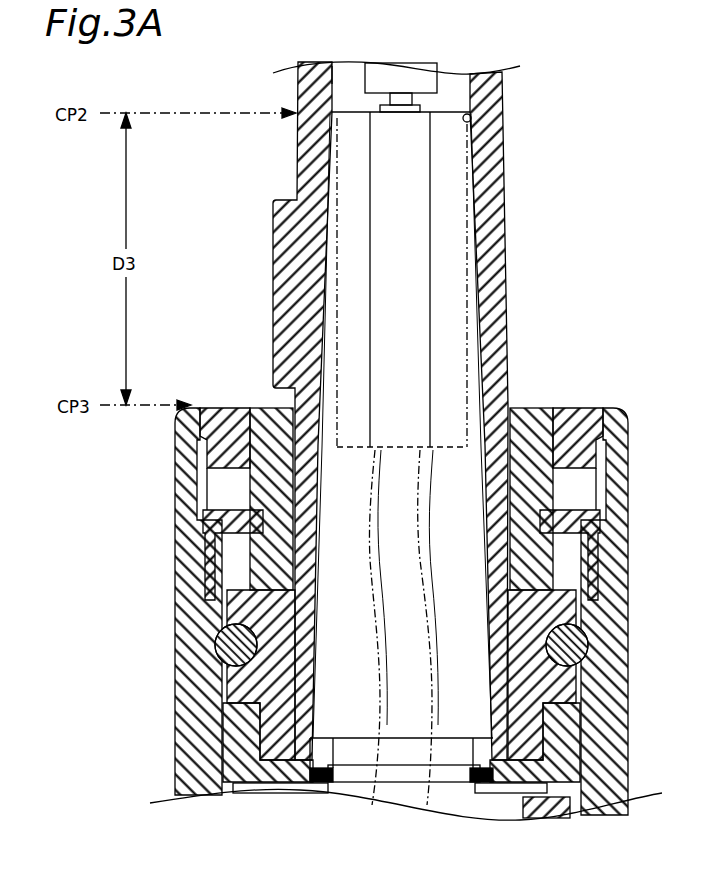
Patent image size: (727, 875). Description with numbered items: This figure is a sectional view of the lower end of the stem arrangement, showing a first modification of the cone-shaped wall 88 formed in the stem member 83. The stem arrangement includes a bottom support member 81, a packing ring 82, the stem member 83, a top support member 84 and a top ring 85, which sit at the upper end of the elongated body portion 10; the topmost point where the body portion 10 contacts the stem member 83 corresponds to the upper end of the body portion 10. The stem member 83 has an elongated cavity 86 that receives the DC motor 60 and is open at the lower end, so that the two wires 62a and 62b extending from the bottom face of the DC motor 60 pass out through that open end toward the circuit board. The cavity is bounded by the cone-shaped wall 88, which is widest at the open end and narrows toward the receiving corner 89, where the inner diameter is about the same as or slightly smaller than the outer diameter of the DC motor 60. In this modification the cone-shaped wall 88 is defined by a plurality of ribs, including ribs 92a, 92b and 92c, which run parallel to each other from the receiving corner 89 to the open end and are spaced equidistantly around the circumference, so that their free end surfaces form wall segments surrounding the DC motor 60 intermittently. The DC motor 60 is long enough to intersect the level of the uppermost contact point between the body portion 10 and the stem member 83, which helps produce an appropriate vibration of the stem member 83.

The body portion 10 is at (604, 577).
The DC motor 60 is at (468, 296).
The wire 62a is at (353, 797).
The wire 62b is at (434, 801).
The bottom support member 81 is at (570, 730).
The packing ring 82 is at (582, 633).
The stem member 83 is at (500, 90).
The top support member 84 is at (582, 482).
The top ring 85 is at (578, 405).
The elongated cavity 86 is at (332, 75).
The cone-shaped wall 88 is at (478, 348).
The receiving corner 89 is at (472, 120).
The rib 92a is at (327, 170).
The rib 92b is at (420, 183).
The rib 92c is at (475, 245).